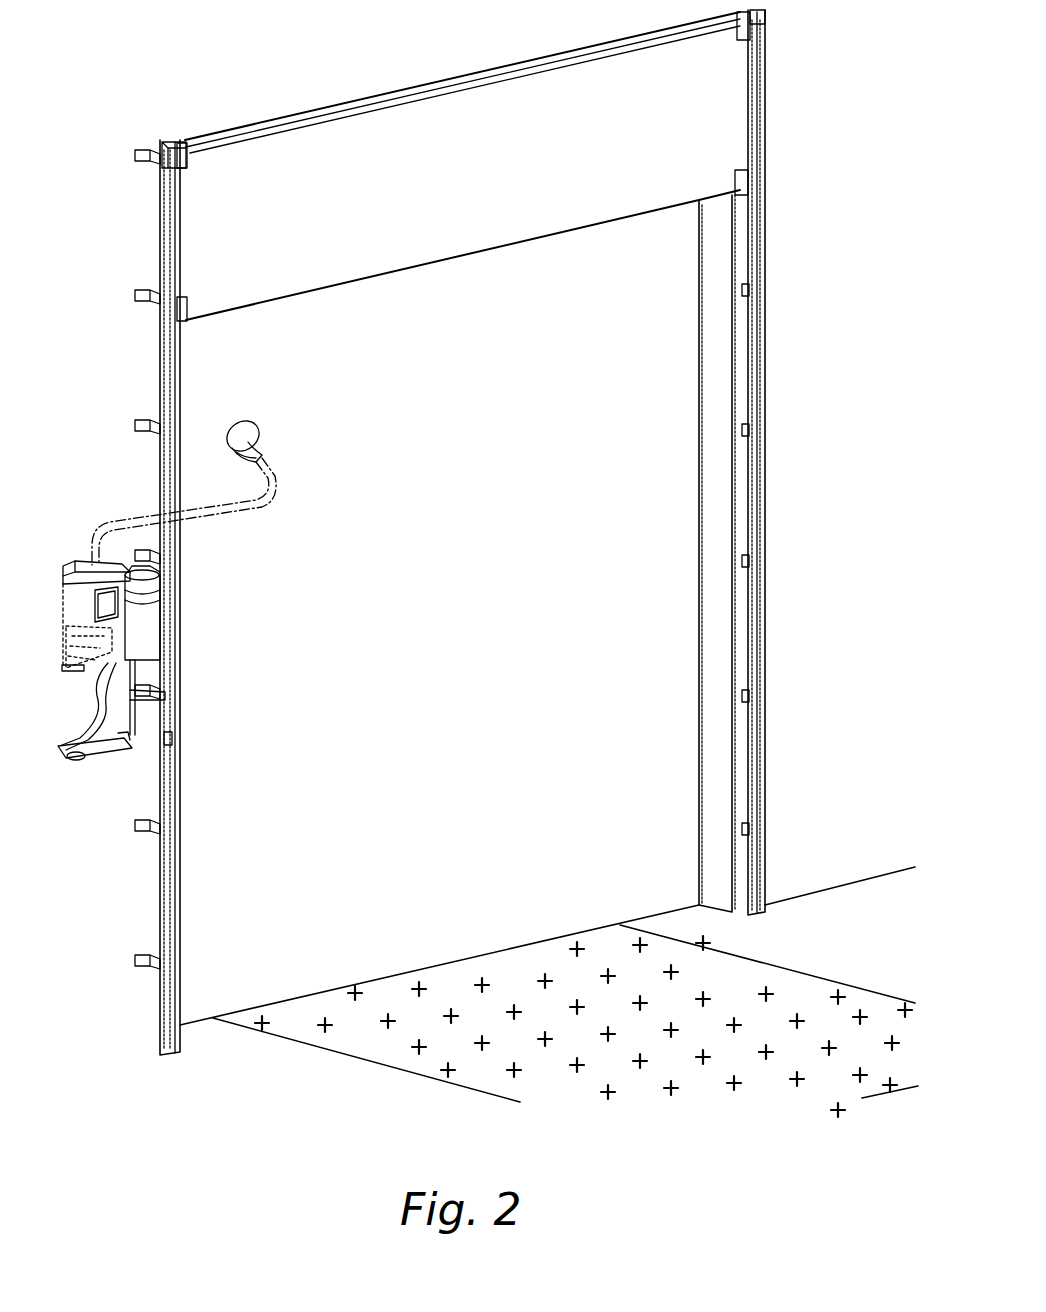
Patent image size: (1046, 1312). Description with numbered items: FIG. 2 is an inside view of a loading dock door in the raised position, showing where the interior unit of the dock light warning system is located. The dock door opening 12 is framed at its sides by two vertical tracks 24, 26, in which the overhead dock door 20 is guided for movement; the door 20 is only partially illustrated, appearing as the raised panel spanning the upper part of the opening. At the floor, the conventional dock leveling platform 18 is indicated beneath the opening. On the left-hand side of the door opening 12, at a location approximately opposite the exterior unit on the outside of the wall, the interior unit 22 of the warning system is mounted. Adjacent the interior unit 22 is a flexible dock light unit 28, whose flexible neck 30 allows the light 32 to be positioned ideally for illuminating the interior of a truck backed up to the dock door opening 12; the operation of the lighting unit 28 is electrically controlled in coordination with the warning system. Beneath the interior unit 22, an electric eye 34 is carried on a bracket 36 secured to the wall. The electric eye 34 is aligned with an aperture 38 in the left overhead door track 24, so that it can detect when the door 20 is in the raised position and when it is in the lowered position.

The dock door opening 12 is at (698, 455).
The dock leveling platform 18 is at (805, 982).
The dock door 20 is at (425, 238).
The interior unit 22 is at (150, 633).
The track 24 is at (180, 352).
The track 26 is at (765, 244).
The flexible dock light unit 28 is at (74, 546).
The flexible neck 30 is at (266, 500).
The light 32 is at (260, 432).
The electric eye 34 is at (120, 760).
The bracket 36 is at (145, 765).
The aperture 38 is at (172, 738).